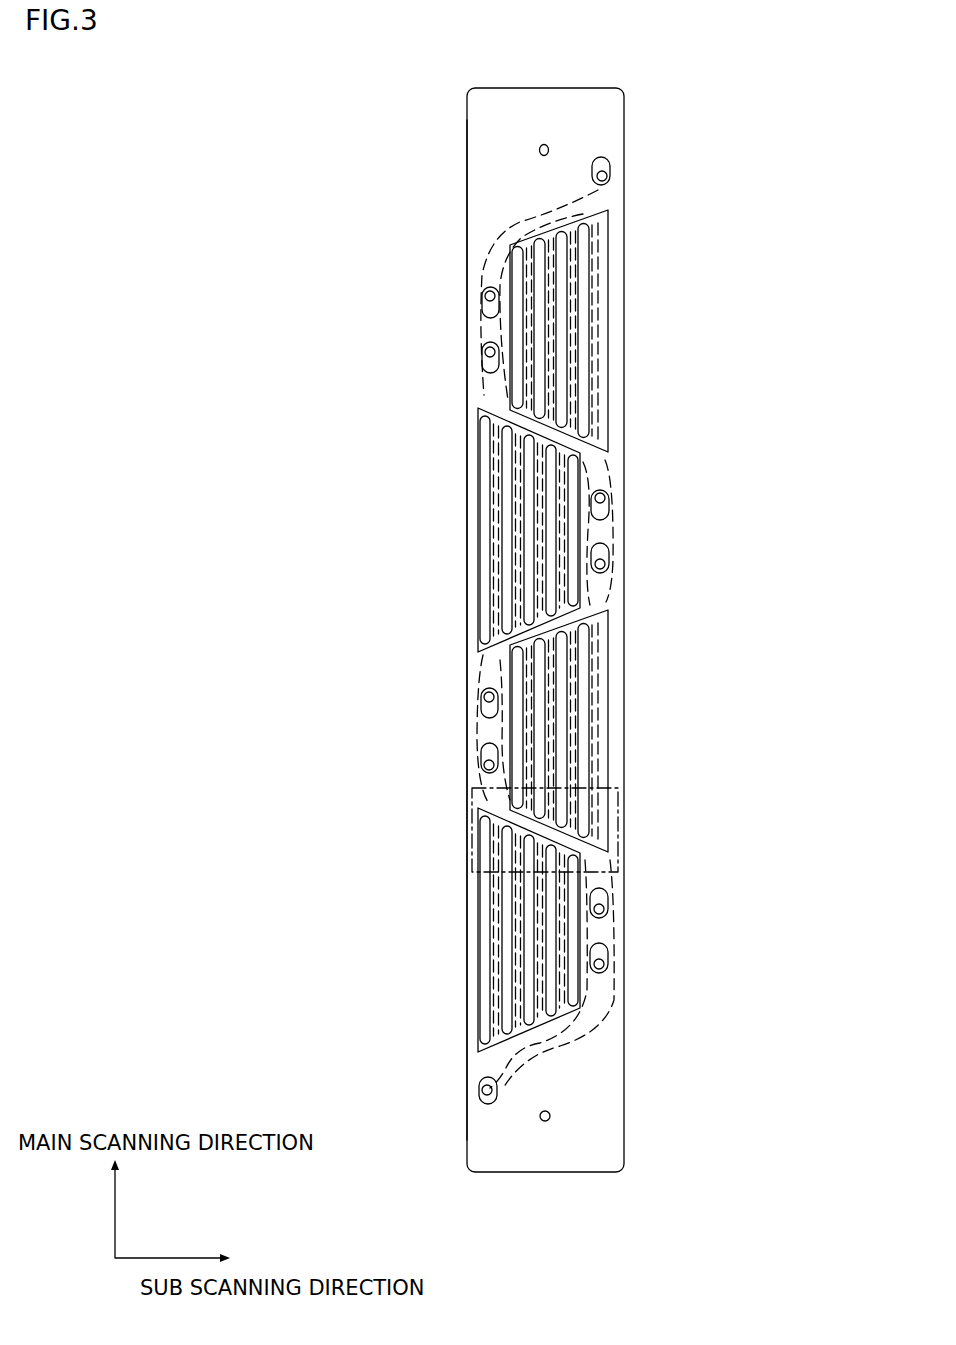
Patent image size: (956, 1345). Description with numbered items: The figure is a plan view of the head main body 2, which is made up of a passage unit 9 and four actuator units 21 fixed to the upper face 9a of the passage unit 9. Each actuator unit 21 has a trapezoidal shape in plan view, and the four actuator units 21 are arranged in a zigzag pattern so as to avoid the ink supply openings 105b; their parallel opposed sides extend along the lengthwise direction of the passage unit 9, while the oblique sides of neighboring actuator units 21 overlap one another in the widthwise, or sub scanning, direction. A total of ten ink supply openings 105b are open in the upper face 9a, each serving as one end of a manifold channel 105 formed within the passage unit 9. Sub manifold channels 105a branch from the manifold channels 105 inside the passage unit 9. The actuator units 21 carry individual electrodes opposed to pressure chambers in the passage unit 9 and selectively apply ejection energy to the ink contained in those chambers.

The head main body 2 is at (640, 117).
The passage unit 9 is at (632, 687).
The upper face 9a is at (482, 169).
The actuator unit 21 is at (607, 312).
The manifold channel 105 is at (478, 270).
The sub manifold channel 105a is at (521, 522).
The ink supply opening 105b is at (608, 172).